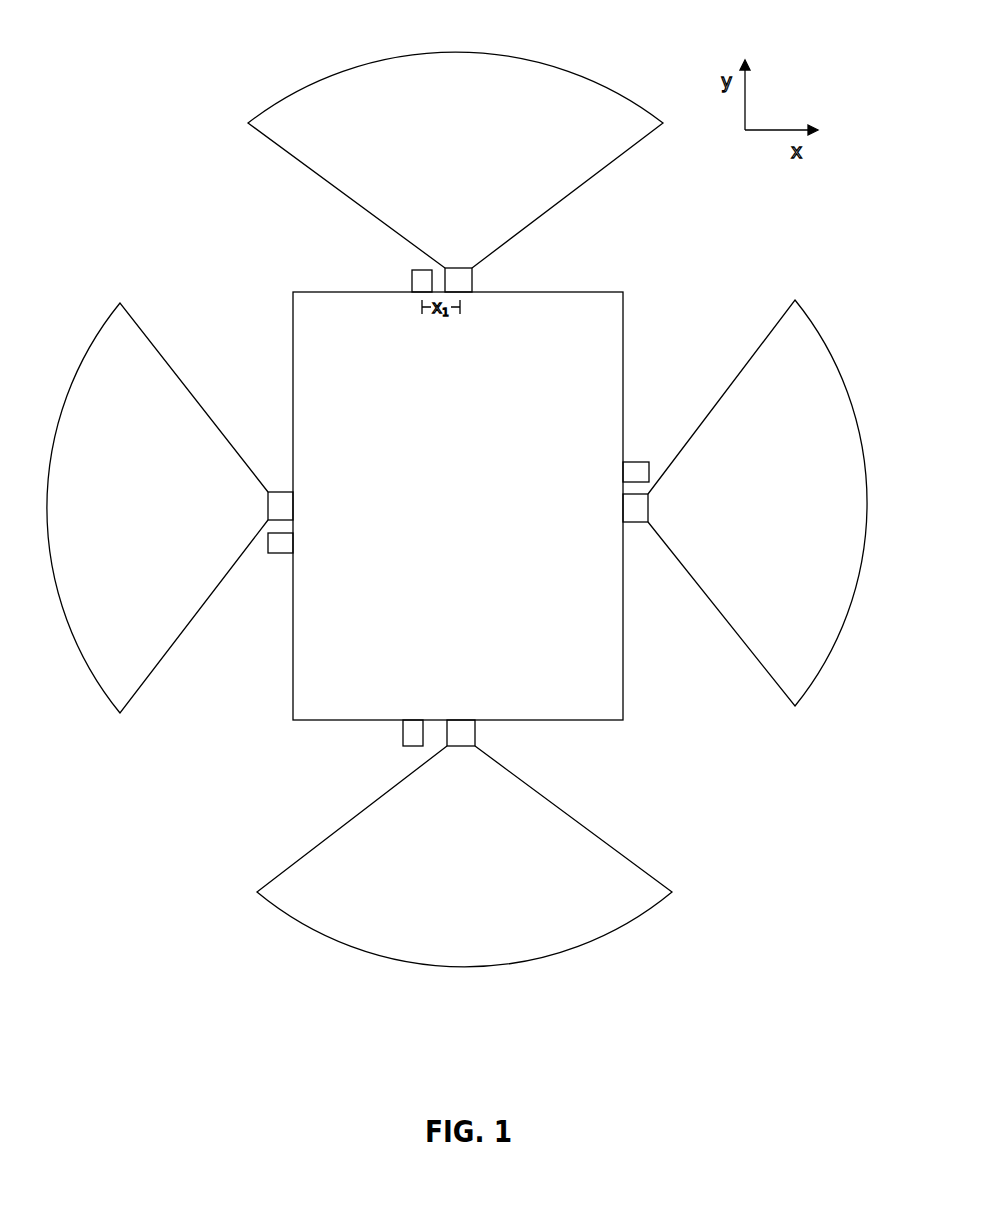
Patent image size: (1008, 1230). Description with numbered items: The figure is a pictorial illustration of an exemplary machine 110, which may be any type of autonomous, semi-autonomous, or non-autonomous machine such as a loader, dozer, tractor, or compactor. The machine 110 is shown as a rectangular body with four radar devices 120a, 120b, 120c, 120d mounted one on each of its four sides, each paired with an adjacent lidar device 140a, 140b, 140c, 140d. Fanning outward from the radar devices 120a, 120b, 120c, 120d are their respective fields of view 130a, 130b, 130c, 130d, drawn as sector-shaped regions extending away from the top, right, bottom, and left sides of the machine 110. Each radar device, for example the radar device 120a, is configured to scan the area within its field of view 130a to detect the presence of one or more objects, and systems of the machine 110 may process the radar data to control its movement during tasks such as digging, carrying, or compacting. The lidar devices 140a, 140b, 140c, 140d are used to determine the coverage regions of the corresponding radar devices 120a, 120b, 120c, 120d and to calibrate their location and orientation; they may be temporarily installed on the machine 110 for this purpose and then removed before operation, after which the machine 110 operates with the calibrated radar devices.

The machine 110 is at (458, 506).
The radar device 120a is at (472, 282).
The radar device 120b is at (637, 522).
The radar device 120c is at (475, 735).
The radar device 120d is at (280, 492).
The field of view 130a is at (283, 100).
The field of view 130b is at (815, 325).
The field of view 130c is at (628, 922).
The field of view 130d is at (97, 683).
The lidar device 140a is at (412, 282).
The lidar device 140b is at (638, 462).
The lidar device 140c is at (403, 735).
The lidar device 140d is at (280, 553).